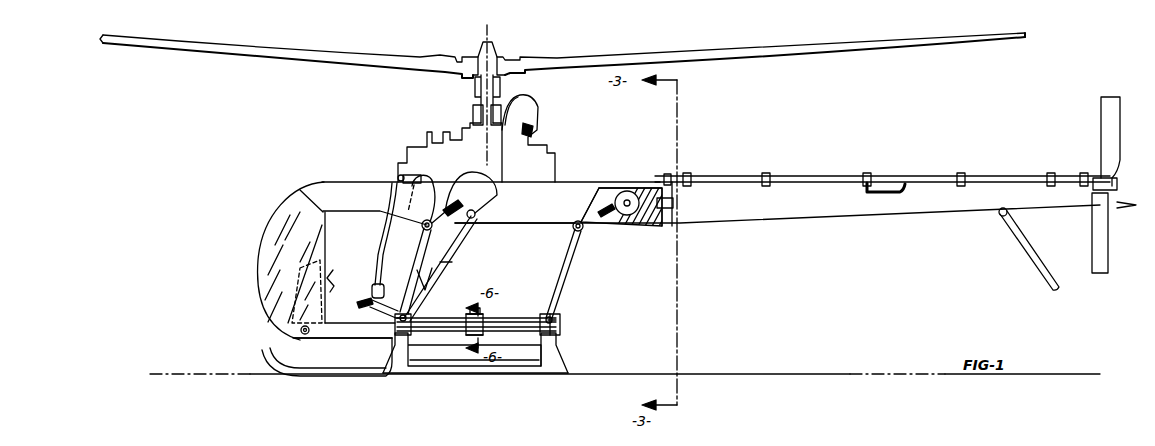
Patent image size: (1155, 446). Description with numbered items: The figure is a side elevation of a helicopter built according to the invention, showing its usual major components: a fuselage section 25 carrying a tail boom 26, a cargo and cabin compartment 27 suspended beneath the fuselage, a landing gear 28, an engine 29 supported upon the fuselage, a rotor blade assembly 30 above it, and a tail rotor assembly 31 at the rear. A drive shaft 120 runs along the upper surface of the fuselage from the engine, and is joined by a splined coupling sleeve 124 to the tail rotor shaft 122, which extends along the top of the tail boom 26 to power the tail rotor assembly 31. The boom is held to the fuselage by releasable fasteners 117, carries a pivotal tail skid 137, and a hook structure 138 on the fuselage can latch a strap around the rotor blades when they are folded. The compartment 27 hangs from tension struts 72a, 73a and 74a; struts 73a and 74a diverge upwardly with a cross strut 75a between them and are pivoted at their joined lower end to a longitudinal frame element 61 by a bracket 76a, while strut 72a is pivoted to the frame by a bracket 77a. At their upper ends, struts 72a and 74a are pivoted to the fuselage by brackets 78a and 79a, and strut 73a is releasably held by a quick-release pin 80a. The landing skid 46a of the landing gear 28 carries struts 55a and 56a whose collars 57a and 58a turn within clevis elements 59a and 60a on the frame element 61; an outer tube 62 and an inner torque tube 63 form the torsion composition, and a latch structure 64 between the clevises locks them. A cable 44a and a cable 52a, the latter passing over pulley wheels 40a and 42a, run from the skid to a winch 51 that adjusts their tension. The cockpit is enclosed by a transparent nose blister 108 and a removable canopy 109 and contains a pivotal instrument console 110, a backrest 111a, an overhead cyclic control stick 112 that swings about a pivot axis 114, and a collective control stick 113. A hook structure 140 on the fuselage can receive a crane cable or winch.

The rotor blade assembly 30 is at (505, 44).
The engine 29 is at (556, 142).
The tail rotor assembly 31 is at (1098, 108).
The canopy 109 is at (340, 181).
The pivot axis 114 is at (400, 177).
The bracket 79a is at (437, 184).
The pin 80a is at (480, 195).
The drive shaft 120 is at (591, 195).
The bracket 78a is at (618, 191).
The sheave 42a is at (646, 168).
The winch 51 is at (671, 174).
The coupling sleeve 124 is at (686, 173).
The tail rotor shaft 122 is at (803, 176).
The hook structure 138 is at (905, 182).
The nose blister 108 is at (263, 247).
The cyclic pitch control stick 112 is at (383, 237).
The instrument console 110 is at (333, 282).
The cable 44a is at (438, 258).
The hook structure 140 is at (495, 237).
The pulley wheel 40a is at (574, 231).
The cable 52a is at (592, 230).
The fuselage section 25 is at (650, 230).
The releasable fasteners 117 is at (679, 213).
The tail boom 26 is at (808, 222).
The tail skid 137 is at (1022, 258).
The strut 73a is at (458, 248).
The strut 74a is at (430, 266).
The cross strut 75a is at (423, 282).
The strut 72a is at (570, 262).
The cargo and cabin compartment 27 is at (572, 290).
The backrest 111a is at (431, 271).
The inner torque tube 63 is at (534, 326).
The bracket 77a is at (558, 318).
The clevis element 60a is at (565, 325).
The collar 58a is at (562, 334).
The strut 56a is at (553, 357).
The collective pitch control stick 113 is at (358, 306).
The clevis element 59a is at (412, 314).
The latch structure 64 is at (485, 336).
The frame element 61 is at (345, 336).
The bracket 76a is at (395, 322).
The collar 57a is at (404, 336).
The outer tube 62 is at (455, 340).
The strut 55a is at (393, 352).
The landing skid 46a is at (436, 375).
The landing gear 28 is at (491, 375).